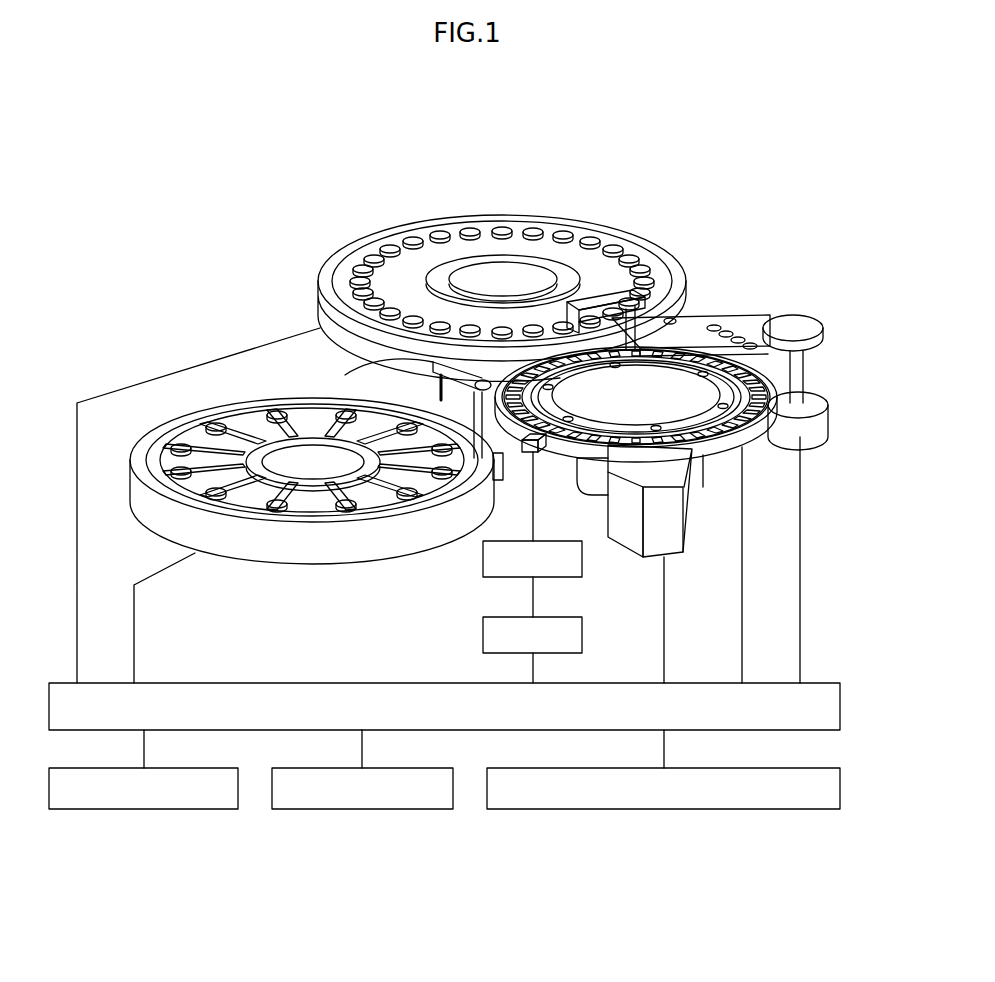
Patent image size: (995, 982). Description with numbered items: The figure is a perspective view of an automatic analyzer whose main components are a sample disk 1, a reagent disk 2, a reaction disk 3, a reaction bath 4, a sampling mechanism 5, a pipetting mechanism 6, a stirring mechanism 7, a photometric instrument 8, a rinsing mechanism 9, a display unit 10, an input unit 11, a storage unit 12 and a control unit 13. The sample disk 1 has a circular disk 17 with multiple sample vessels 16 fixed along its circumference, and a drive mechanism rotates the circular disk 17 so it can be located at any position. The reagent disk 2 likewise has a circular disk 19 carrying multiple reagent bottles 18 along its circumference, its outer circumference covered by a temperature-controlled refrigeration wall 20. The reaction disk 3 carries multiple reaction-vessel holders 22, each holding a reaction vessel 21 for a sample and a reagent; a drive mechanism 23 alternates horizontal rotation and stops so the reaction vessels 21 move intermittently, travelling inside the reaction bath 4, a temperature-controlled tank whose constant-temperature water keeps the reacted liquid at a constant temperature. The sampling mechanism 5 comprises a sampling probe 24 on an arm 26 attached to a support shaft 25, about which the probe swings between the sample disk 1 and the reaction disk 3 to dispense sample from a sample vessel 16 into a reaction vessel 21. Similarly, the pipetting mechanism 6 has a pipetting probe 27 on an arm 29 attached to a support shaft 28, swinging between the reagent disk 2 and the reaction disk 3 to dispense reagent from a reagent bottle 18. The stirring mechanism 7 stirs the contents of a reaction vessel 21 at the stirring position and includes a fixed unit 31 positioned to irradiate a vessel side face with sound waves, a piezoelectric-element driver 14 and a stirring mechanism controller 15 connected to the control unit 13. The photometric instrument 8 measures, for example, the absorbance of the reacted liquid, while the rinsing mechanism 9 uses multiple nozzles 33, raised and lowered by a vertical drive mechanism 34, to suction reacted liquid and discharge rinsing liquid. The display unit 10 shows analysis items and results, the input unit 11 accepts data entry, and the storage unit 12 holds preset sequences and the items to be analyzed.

The sample disk 1 is at (490, 200).
The reagent disk 2 is at (320, 555).
The reaction disk 3 is at (742, 440).
The reaction bath 4 is at (752, 438).
The sampling mechanism 5 is at (603, 282).
The pipetting mechanism 6 is at (318, 304).
The stirring mechanism 7 is at (472, 570).
The photometric instrument 8 is at (675, 550).
The rinsing mechanism 9 is at (793, 318).
The display unit 10 is at (143, 810).
The input unit 11 is at (362, 810).
The storage unit 12 is at (668, 810).
The control unit 13 is at (388, 683).
The piezoelectric-element driver 14 is at (584, 565).
The stirring mechanism controller 15 is at (584, 632).
The sample vessel 16 is at (440, 238).
The circular disk 17 is at (400, 268).
The reagent bottle 18 is at (228, 418).
The circular disk 19 is at (152, 447).
The refrigeration wall 20 is at (258, 548).
The reaction vessel 21 is at (795, 373).
The reaction-vessel holder 22 is at (772, 396).
The drive mechanism 23 is at (590, 478).
The sampling probe 24 is at (552, 328).
The support shaft 25 is at (673, 320).
The arm 26 is at (588, 300).
The pipetting probe 27 is at (392, 364).
The support shaft 28 is at (470, 414).
The arm 29 is at (390, 364).
The fixed unit 31 is at (544, 450).
The nozzle 33 is at (718, 328).
The vertical drive mechanism 34 is at (818, 438).